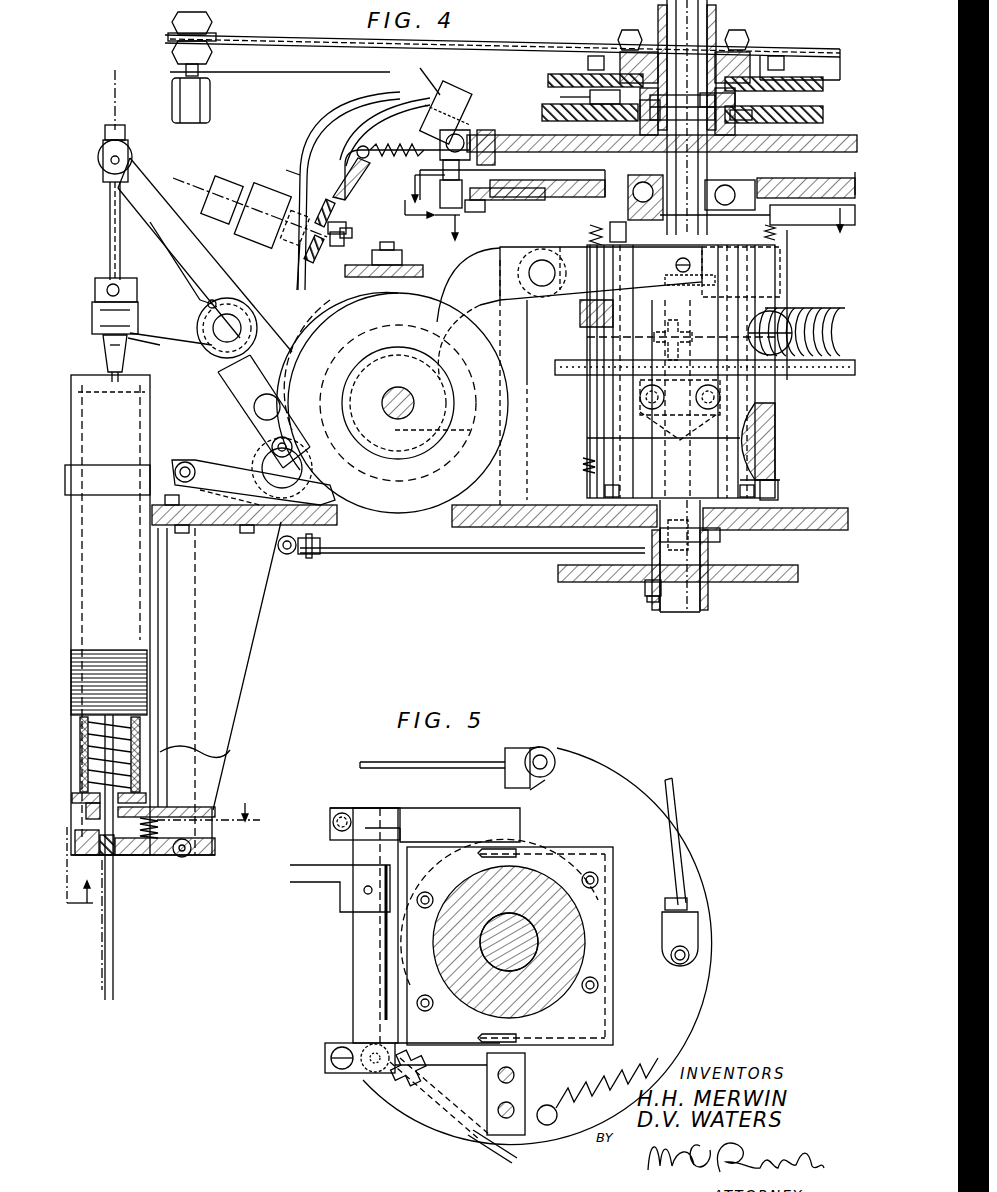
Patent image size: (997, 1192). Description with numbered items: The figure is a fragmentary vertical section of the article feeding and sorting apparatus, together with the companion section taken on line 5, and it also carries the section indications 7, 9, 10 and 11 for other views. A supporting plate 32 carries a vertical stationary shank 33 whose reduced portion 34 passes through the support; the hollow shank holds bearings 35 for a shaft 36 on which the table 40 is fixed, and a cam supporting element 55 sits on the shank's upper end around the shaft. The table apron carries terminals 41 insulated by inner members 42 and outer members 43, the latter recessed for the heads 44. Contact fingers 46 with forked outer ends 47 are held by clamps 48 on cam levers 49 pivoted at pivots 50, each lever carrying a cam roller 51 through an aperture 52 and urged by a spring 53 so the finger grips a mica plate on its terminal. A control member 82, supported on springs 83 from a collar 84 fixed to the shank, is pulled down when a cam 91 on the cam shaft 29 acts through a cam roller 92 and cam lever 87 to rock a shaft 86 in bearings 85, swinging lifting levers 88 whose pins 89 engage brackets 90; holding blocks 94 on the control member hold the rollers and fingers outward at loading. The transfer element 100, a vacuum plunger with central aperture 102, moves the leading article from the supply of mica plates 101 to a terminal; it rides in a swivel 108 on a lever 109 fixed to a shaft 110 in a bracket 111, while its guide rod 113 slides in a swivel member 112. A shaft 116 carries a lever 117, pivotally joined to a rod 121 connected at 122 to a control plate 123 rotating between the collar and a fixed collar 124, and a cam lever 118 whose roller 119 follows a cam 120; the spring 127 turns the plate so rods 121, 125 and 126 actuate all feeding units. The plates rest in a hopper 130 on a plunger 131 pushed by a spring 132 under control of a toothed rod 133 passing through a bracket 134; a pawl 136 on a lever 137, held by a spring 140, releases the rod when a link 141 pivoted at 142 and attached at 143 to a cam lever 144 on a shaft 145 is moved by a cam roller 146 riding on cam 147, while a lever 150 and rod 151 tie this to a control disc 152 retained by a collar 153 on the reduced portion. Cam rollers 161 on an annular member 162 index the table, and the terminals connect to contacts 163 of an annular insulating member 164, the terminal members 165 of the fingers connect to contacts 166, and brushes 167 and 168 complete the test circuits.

In FIG. 4, the section line 5- 5 is at (636, 224).
In FIG. 4, the section line 7- 7 is at (627, 185).
In FIG. 4, the section line 9- 9 is at (417, 220).
In FIG. 4, the section line 10- 10 is at (308, 185).
In FIG. 4, the section line 11- 11 is at (168, 851).
In FIG. 4, the cam shaft 29 is at (400, 392).
In FIG. 4, the supporting plate 32 is at (828, 530).
In FIG. 4, the stationary shank 33 is at (770, 432).
In FIG. 5, the stationary shank 33 is at (440, 960).
In FIG. 4, the reduced portion 34 is at (690, 612).
In FIG. 4, the bearings 35 is at (650, 188).
In FIG. 4, the shaft 36 is at (716, 40).
In FIG. 5, the shaft 36 is at (515, 920).
In FIG. 4, the table 40 is at (825, 146).
In FIG. 4, the terminals 41 is at (316, 256).
In FIG. 4, the inner members 42 is at (340, 224).
In FIG. 4, the outer members 43 is at (326, 197).
In FIG. 4, the heads 44 is at (297, 278).
In FIG. 4, the contact fingers 46 is at (310, 130).
In FIG. 4, the forked outer ends 47 is at (288, 173).
In FIG. 4, the clamps 48 is at (420, 75).
In FIG. 4, the cam levers 49 is at (465, 135).
In FIG. 4, the pivots 50 is at (372, 130).
In FIG. 4, the cam rollers 51 is at (451, 186).
In FIG. 4, the apertures 52 is at (490, 140).
In FIG. 4, the spring 53 is at (390, 145).
In FIG. 4, the cam supporting element 55 is at (540, 182).
In FIG. 4, the control member 82 is at (815, 222).
In FIG. 4, the springs 83 is at (592, 233).
In FIG. 5, the springs 83 is at (600, 882).
In FIG. 4, the collar 84 is at (782, 278).
In FIG. 5, the collar 84 is at (613, 928).
In FIG. 5, the bearings 85 is at (345, 850).
In FIG. 4, the shaft 86 is at (541, 290).
In FIG. 5, the shaft 86 is at (355, 960).
In FIG. 4, the cam lever 87 is at (490, 300).
In FIG. 5, the cam lever 87 is at (322, 885).
In FIG. 4, the lifting levers 88 is at (570, 292).
In FIG. 5, the lifting levers 88 is at (445, 820).
In FIG. 4, the pins 89 is at (676, 268).
In FIG. 5, the pins 89 is at (500, 1048).
In FIG. 5, the brackets 90 is at (520, 1082).
In FIG. 4, the cam 91 is at (488, 445).
In FIG. 4, the cam roller 92 is at (372, 328).
In FIG. 4, the holding blocks 94 is at (482, 195).
In FIG. 4, the transfer element 100 is at (126, 355).
In FIG. 4, the articles 101 is at (140, 675).
In FIG. 4, the central aperture 102 is at (96, 290).
In FIG. 4, the swivel 108 is at (132, 310).
In FIG. 4, the lever 109 is at (180, 348).
In FIG. 4, the shaft 110 is at (226, 312).
In FIG. 4, the bracket 111 is at (200, 250).
In FIG. 4, the swivel member 112 is at (128, 160).
In FIG. 4, the guide rod 113 is at (110, 245).
In FIG. 4, the shaft 116 is at (258, 415).
In FIG. 4, the lever 117 is at (260, 298).
In FIG. 4, the cam lever 118 is at (272, 450).
In FIG. 4, the roller 119 is at (282, 408).
In FIG. 4, the cam 120 is at (365, 500).
In FIG. 4, the rod 121 is at (530, 400).
In FIG. 5, the rod 121 is at (372, 768).
In FIG. 5, the pivotal connection 122 is at (545, 760).
In FIG. 4, the control plate 123 is at (810, 376).
In FIG. 5, the control plate 123 is at (600, 770).
In FIG. 4, the fixed collar 124 is at (780, 485).
In FIG. 5, the rod 125 is at (682, 866).
In FIG. 5, the rod 126 is at (488, 1152).
In FIG. 4, the spring 127 is at (820, 318).
In FIG. 5, the spring 127 is at (635, 1040).
In FIG. 4, the hopper 130 is at (150, 600).
In FIG. 4, the plunger 131 is at (150, 705).
In FIG. 4, the spring 132 is at (140, 735).
In FIG. 4, the toothed rod 133 is at (115, 910).
In FIG. 4, the bracket 134 is at (248, 640).
In FIG. 4, the pawl 136 is at (80, 830).
In FIG. 4, the lever 137 is at (135, 855).
In FIG. 4, the spring 140 is at (155, 855).
In FIG. 4, the link 141 is at (190, 790).
In FIG. 4, the pivotal connection 142 is at (187, 856).
In FIG. 4, the connection 143 is at (183, 462).
In FIG. 4, the cam lever 144 is at (236, 523).
In FIG. 4, the shaft 145 is at (268, 482).
In FIG. 4, the cam roller 146 is at (415, 465).
In FIG. 4, the cam 147 is at (462, 402).
In FIG. 4, the lever 150 is at (300, 458).
In FIG. 4, the rod 151 is at (468, 555).
In FIG. 4, the control disc 152 is at (560, 580).
In FIG. 4, the collar 153 is at (650, 600).
In FIG. 4, the cam rollers 161 is at (565, 295).
In FIG. 4, the annular member 162 is at (430, 275).
In FIG. 4, the contacts 163 is at (660, 98).
In FIG. 4, the annular insulating member 164 is at (815, 112).
In FIG. 4, the terminal members 165 is at (448, 90).
In FIG. 4, the contacts 166 is at (560, 97).
In FIG. 4, the brush 167 is at (755, 90).
In FIG. 4, the brush 168 is at (560, 80).